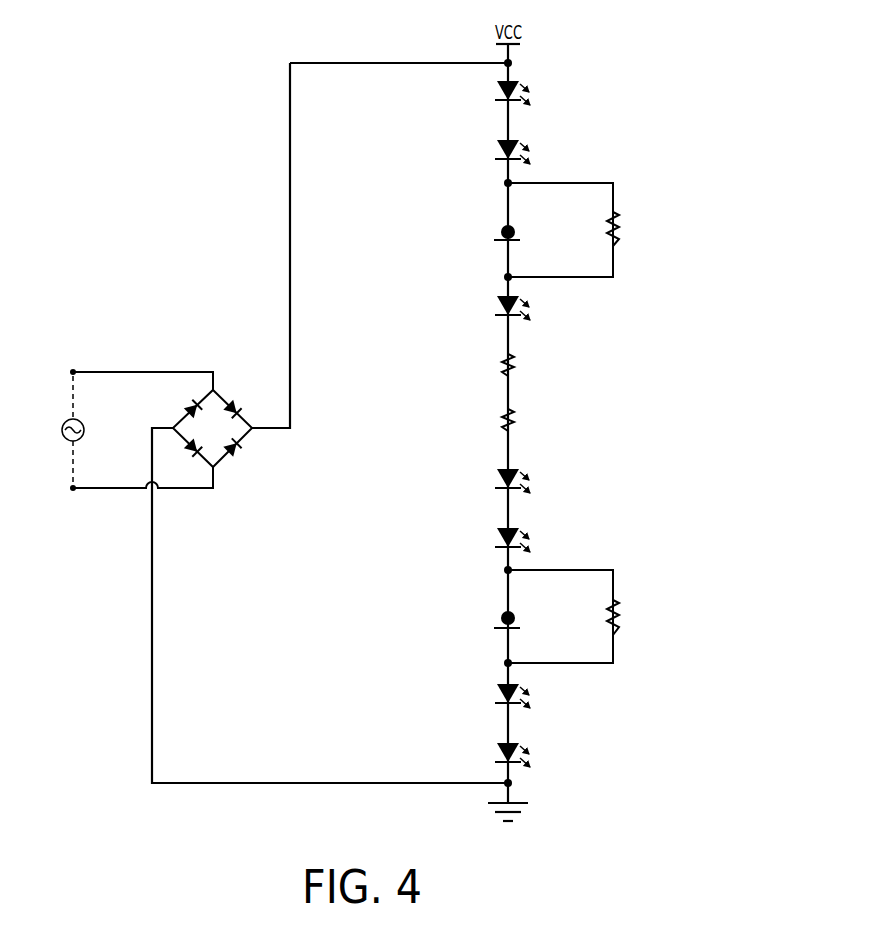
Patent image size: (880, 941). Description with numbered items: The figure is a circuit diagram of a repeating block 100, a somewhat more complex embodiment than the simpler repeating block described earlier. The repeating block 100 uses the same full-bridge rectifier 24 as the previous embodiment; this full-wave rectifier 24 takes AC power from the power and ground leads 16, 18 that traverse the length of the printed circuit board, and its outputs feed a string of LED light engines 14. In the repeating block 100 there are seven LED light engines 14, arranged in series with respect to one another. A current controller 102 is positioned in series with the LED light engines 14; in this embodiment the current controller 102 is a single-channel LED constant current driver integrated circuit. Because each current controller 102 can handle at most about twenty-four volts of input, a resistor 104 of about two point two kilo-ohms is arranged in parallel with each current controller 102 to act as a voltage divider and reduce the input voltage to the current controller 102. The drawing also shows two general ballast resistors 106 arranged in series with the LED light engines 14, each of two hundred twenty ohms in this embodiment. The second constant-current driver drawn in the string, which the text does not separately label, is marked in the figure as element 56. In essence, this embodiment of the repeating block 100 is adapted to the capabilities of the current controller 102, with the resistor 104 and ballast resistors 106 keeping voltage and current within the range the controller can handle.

The repeating block 100 is at (676, 100).
The LED light engines 14 is at (497, 88).
The power lead 16 is at (110, 370).
The ground lead 18 is at (85, 493).
The full-wave rectifier 24 is at (222, 397).
The current controller 102 is at (500, 232).
The resistor 104 is at (614, 212).
The ballast resistors 106 is at (500, 362).
The second linear constant current driver Q2 56 is at (500, 618).